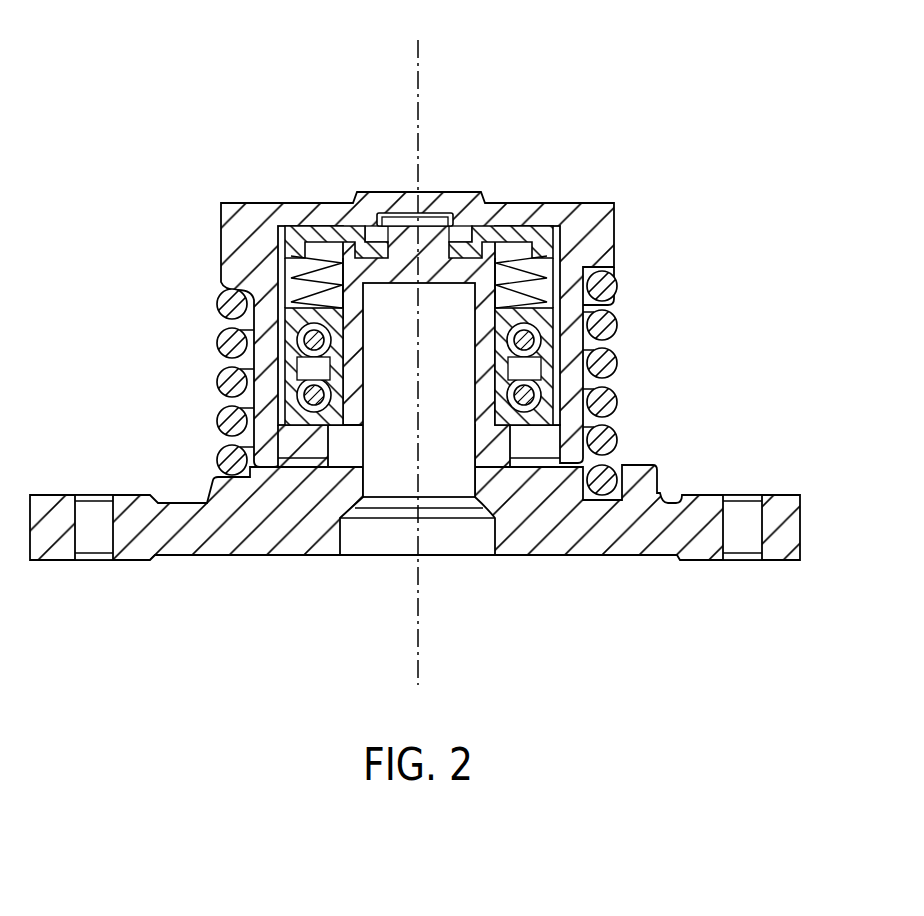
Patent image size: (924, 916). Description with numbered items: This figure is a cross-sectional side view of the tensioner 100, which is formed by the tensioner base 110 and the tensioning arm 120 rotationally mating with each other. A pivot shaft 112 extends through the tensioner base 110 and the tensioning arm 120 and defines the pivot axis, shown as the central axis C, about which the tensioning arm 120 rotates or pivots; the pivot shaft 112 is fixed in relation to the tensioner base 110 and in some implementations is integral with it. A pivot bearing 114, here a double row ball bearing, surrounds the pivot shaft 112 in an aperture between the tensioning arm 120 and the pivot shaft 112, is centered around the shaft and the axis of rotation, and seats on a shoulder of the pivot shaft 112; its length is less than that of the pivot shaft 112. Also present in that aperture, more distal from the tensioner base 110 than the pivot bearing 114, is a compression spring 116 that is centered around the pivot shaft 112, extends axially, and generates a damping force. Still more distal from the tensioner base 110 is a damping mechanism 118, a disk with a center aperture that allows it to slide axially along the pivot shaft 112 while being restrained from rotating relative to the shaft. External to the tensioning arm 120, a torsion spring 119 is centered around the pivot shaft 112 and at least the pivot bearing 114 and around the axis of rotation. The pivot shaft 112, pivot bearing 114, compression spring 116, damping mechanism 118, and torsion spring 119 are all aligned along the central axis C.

The tensioner 100 is at (216, 93).
The tensioner base 110 is at (253, 555).
The pivot shaft 112 is at (614, 269).
The pivot bearing 114 is at (257, 317).
The compression spring 116 is at (552, 233).
The damping mechanism 118 is at (500, 223).
The torsion spring 119 is at (232, 381).
The tensioning arm 120 is at (265, 225).
The central axis C is at (424, 122).